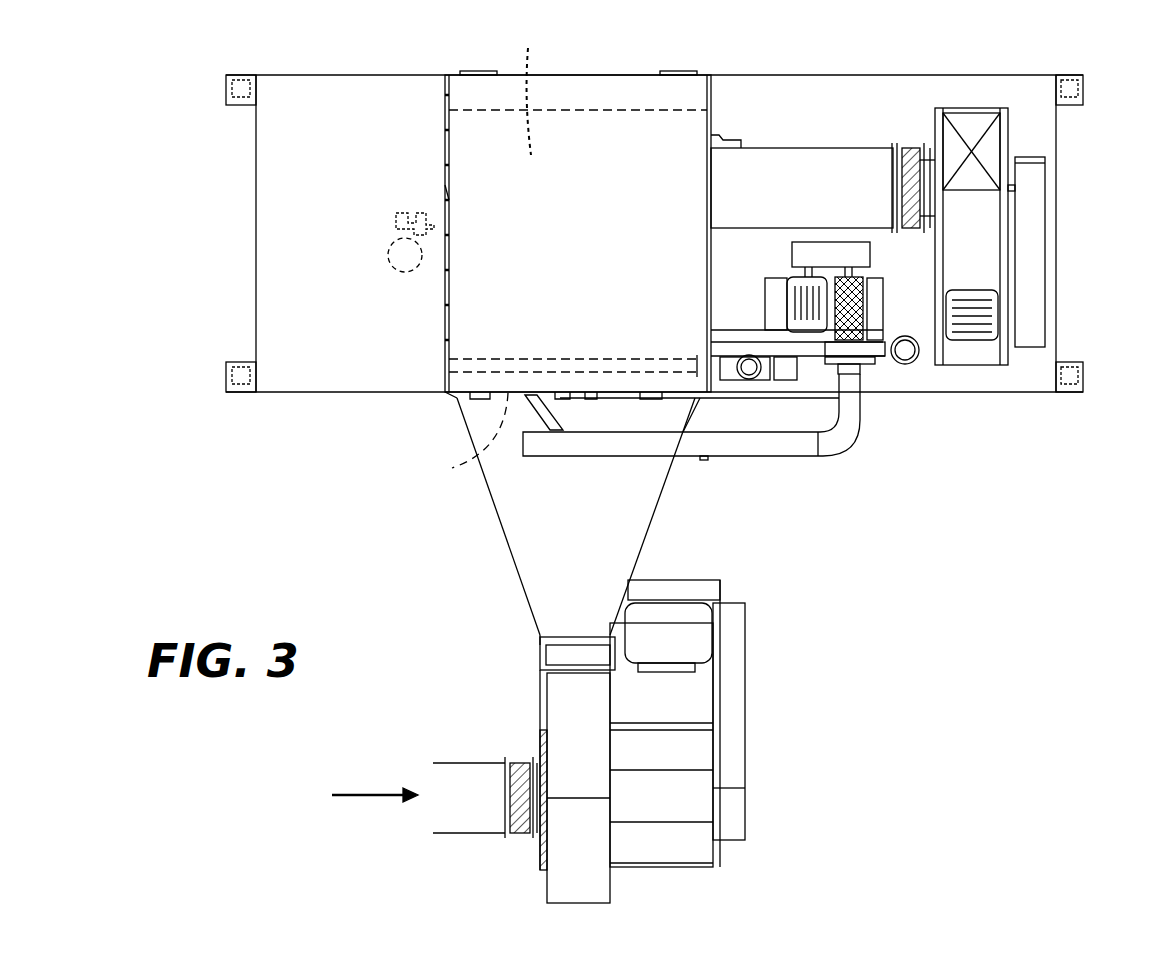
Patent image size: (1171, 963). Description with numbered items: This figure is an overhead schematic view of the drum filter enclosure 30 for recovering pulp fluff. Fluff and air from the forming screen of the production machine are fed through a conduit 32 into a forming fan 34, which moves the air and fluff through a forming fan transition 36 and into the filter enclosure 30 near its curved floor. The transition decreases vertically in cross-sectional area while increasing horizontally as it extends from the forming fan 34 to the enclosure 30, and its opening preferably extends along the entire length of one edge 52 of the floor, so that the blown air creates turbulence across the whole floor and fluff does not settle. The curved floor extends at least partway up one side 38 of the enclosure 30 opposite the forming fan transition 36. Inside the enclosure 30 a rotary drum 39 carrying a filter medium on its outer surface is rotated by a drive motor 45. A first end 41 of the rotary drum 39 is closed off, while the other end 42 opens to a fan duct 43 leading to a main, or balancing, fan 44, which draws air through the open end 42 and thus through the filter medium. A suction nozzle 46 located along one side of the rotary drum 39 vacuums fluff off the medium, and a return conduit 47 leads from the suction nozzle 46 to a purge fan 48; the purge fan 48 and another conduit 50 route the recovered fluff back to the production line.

The drum filter enclosure 30 is at (378, 482).
The conduit 32 is at (460, 835).
The forming fan 34 is at (617, 883).
The forming fan transition 36 is at (521, 529).
The side of the filter enclosure 38 is at (630, 75).
The rotary drum 39 is at (532, 89).
The first end of the rotary drum 41 is at (445, 192).
The other end of the rotary drum 42 is at (712, 120).
The fan duct 43 is at (870, 160).
The main fan 44 is at (1035, 212).
The drive motor 45 is at (395, 238).
The suction nozzle 46 is at (460, 463).
The return conduit 47 is at (793, 443).
The purge fan 48 is at (868, 378).
The conduit 50 is at (765, 380).
The edge of the floor 52 is at (587, 392).